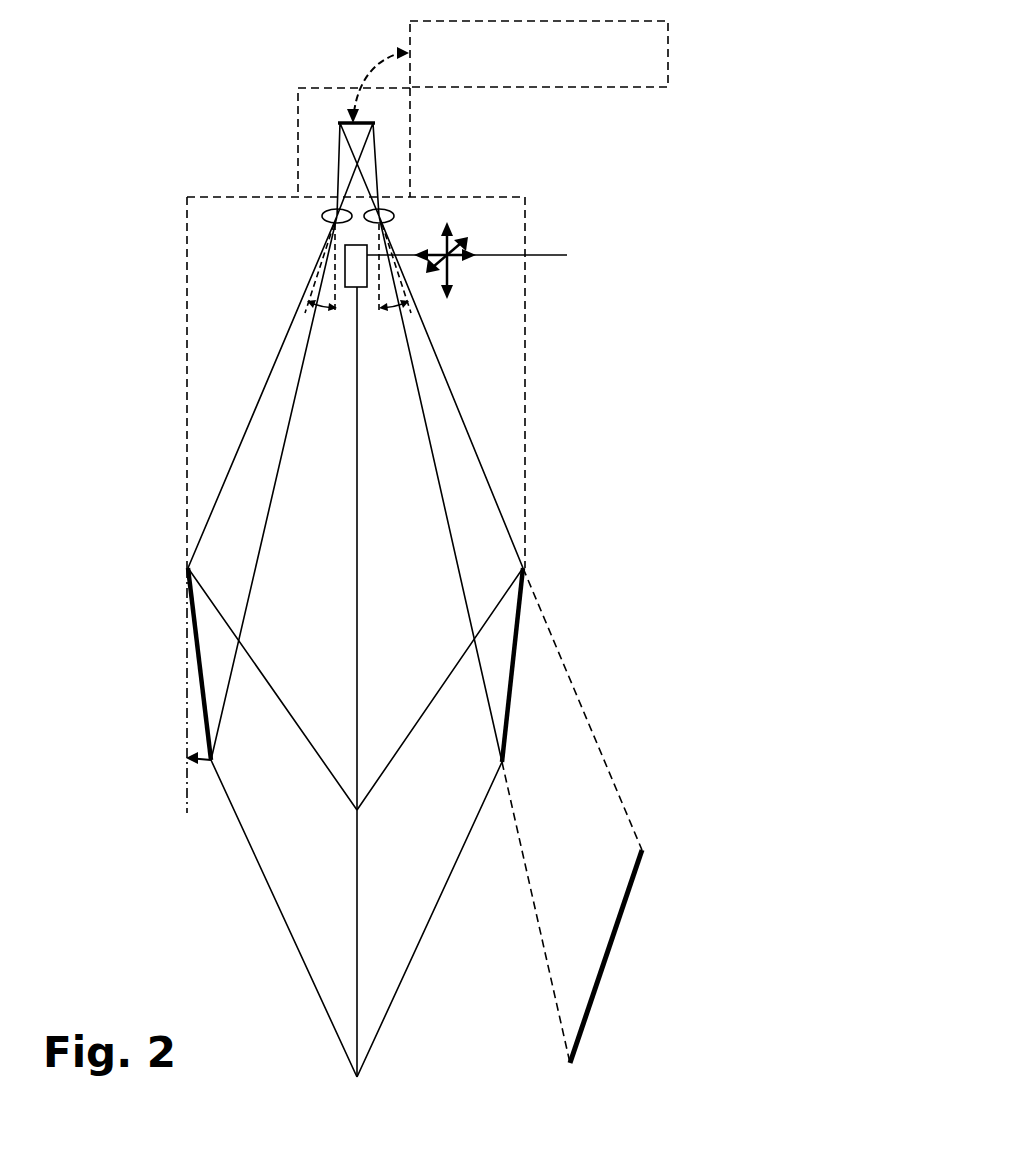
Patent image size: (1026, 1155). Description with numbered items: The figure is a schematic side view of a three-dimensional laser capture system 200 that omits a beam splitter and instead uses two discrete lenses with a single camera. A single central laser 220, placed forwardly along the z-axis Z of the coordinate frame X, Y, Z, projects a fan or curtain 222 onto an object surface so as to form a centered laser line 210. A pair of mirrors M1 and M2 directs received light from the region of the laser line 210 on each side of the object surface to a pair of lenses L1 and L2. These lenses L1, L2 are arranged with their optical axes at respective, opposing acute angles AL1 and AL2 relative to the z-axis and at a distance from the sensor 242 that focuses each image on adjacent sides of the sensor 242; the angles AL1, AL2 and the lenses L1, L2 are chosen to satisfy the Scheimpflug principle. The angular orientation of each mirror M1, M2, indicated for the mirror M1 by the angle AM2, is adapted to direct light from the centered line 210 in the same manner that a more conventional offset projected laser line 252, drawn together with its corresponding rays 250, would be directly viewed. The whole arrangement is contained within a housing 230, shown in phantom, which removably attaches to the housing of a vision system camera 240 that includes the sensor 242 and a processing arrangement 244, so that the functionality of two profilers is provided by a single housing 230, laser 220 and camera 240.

The system 200 is at (505, 391).
The laser line 210 is at (364, 850).
The laser 220 is at (345, 270).
The fan/curtain 222 is at (355, 655).
The housing 230 is at (525, 212).
The vision system camera 240 is at (410, 135).
The sensor 242 is at (343, 122).
The processing arrangement 244 is at (612, 78).
The alternate mirror position rays 250 is at (620, 801).
The offset projected laser line 252 is at (639, 876).
The lens L1 is at (332, 210).
The lens L2 is at (385, 210).
The mirror M1 is at (202, 705).
The mirror M2 is at (517, 660).
The acute angle AL1 is at (313, 309).
The acute angle AL2 is at (401, 309).
The mirror angle AM2 is at (192, 762).
The X axis X is at (460, 245).
The Y axis Y is at (455, 260).
The z-axis Z is at (448, 277).